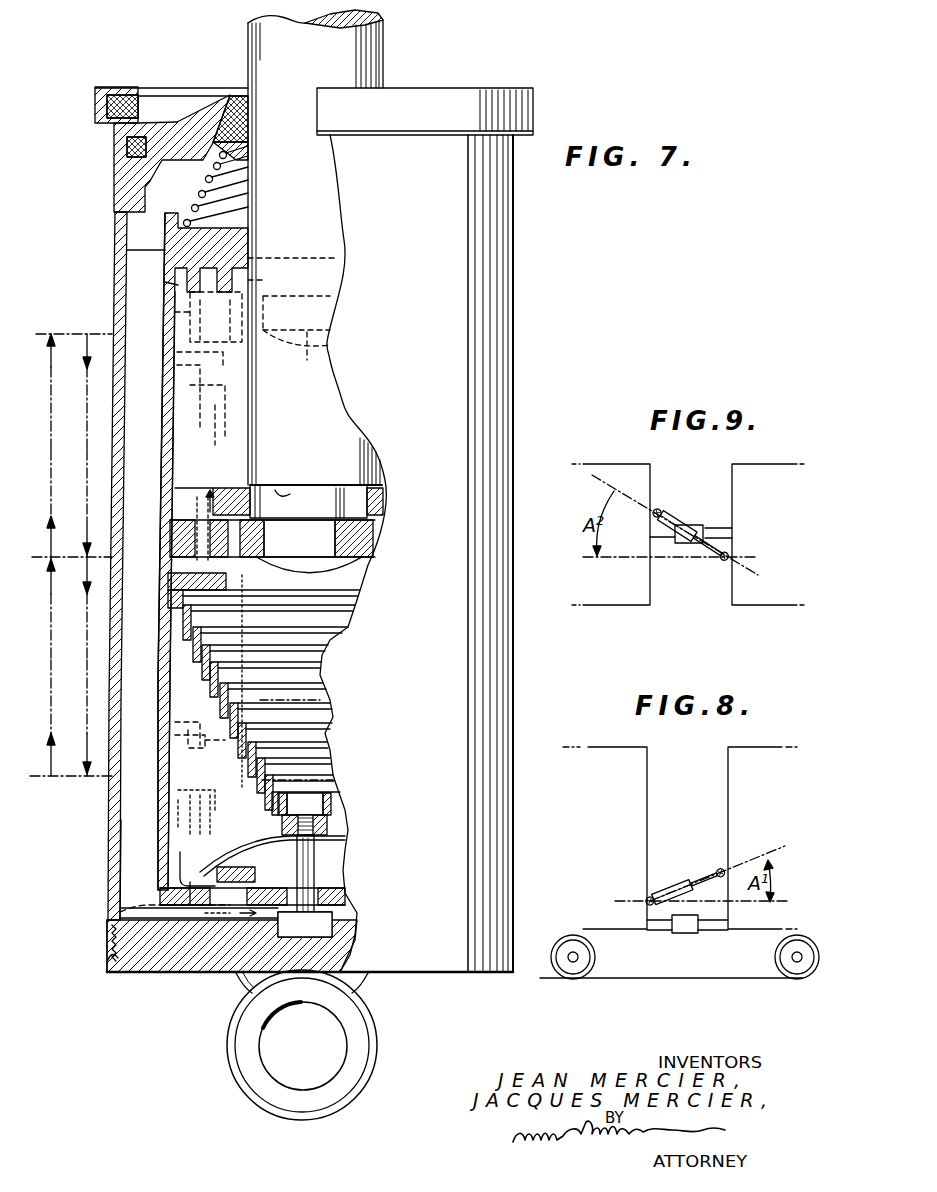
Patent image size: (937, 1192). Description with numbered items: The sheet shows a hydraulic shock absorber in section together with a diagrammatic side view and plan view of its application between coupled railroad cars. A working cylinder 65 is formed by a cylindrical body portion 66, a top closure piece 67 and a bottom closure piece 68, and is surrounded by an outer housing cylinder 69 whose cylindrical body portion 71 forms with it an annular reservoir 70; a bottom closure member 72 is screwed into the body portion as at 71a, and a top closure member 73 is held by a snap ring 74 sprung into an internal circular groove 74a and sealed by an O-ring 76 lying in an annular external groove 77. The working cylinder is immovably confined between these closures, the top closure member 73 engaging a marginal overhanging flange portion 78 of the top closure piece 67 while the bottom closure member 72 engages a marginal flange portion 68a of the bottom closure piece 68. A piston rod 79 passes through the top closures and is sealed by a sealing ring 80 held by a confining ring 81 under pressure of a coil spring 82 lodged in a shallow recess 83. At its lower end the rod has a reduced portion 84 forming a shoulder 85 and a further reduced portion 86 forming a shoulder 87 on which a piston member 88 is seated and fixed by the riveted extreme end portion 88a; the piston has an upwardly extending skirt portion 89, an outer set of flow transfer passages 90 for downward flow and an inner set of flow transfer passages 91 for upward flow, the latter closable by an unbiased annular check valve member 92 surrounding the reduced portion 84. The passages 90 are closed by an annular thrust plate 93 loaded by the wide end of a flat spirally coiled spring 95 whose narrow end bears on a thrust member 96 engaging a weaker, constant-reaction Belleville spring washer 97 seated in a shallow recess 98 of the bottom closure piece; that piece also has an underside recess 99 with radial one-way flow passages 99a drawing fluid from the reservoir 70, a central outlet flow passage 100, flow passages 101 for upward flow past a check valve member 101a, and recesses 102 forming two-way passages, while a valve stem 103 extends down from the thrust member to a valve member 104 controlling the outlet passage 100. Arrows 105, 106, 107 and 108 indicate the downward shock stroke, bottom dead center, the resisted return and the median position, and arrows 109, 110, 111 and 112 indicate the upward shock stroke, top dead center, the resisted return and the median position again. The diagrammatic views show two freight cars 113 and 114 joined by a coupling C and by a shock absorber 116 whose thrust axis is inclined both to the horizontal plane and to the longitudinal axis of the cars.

In FIG. 7, the working cylinder 65 is at (162, 288).
In FIG. 7, the cylindrical body portion 66 is at (164, 302).
In FIG. 7, the top closure piece 67 is at (232, 262).
In FIG. 7, the bottom closure piece 68 is at (175, 930).
In FIG. 7, the marginal flange portion 68a is at (140, 903).
In FIG. 7, the outer housing cylinder 69 is at (108, 447).
In FIG. 7, the annular reservoir 70 is at (96, 659).
In FIG. 7, the cylindrical body portion 71 is at (108, 828).
In FIG. 7, the screw connection 71a is at (112, 940).
In FIG. 7, the bottom closure member 72 is at (130, 932).
In FIG. 7, the top closure member 73 is at (172, 140).
In FIG. 7, the snap ring 74 is at (106, 100).
In FIG. 7, the internal circular groove 74a is at (108, 105).
In FIG. 7, the sealing ring 76 is at (127, 146).
In FIG. 7, the annular external groove 77 is at (130, 160).
In FIG. 7, the marginal overhanging flange portion 78 is at (140, 228).
In FIG. 7, the piston rod 79 is at (368, 66).
In FIG. 7, the sealing ring 80 is at (240, 128).
In FIG. 7, the confining ring 81 is at (245, 152).
In FIG. 7, the coil spring 82 is at (240, 182).
In FIG. 7, the shallow recess 83 is at (222, 238).
In FIG. 7, the reduced portion 84 is at (308, 501).
In FIG. 7, the shoulder 85 is at (290, 490).
In FIG. 7, the further reduced portion 86 is at (299, 538).
In FIG. 7, the shoulder 87 is at (338, 515).
In FIG. 7, the piston member 88 is at (190, 320).
In FIG. 7, the riveted extreme end portion 88a is at (392, 565).
In FIG. 7, the skirt portion 89 is at (166, 283).
In FIG. 7, the outer flow transfer passages 90 is at (180, 530).
In FIG. 7, the inner flow transfer passages 91 is at (200, 540).
In FIG. 7, the check valve member 92 is at (255, 278).
In FIG. 7, the annular thrust plate 93 is at (180, 370).
In FIG. 7, the spirally coiled spring 95 is at (185, 424).
In FIG. 7, the thrust member 96 is at (335, 828).
In FIG. 7, the Belleville spring washer 97 is at (330, 850).
In FIG. 7, the shallow recess 98 is at (200, 868).
In FIG. 7, the shallow recess 99 is at (190, 908).
In FIG. 7, the one-way flow passages 99a is at (108, 962).
In FIG. 7, the central outlet flow passage 100 is at (320, 880).
In FIG. 7, the flow passages 101 is at (222, 920).
In FIG. 7, the check valve member 101a is at (205, 920).
In FIG. 7, the recesses 102 is at (215, 880).
In FIG. 7, the valve stem 103 is at (318, 895).
In FIG. 7, the valve member 104 is at (335, 918).
In FIG. 7, the arrow 105 is at (94, 608).
In FIG. 7, the arrow 106 is at (94, 718).
In FIG. 7, the arrow 107 is at (48, 718).
In FIG. 7, the arrow 108 is at (50, 608).
In FIG. 7, the arrow 109 is at (50, 503).
In FIG. 7, the arrow 110 is at (50, 392).
In FIG. 7, the arrow 111 is at (94, 392).
In FIG. 7, the arrow 112 is at (92, 503).
In FIG. 9, the freight car 113 is at (650, 608).
In FIG. 8, the freight car 113 is at (647, 748).
In FIG. 9, the freight car 114 is at (763, 608).
In FIG. 8, the freight car 114 is at (738, 750).
In FIG. 9, the shock absorber 116 is at (680, 525).
In FIG. 8, the shock absorber 116 is at (665, 886).
In FIG. 9, the coupling C is at (680, 544).
In FIG. 8, the coupling C is at (674, 933).